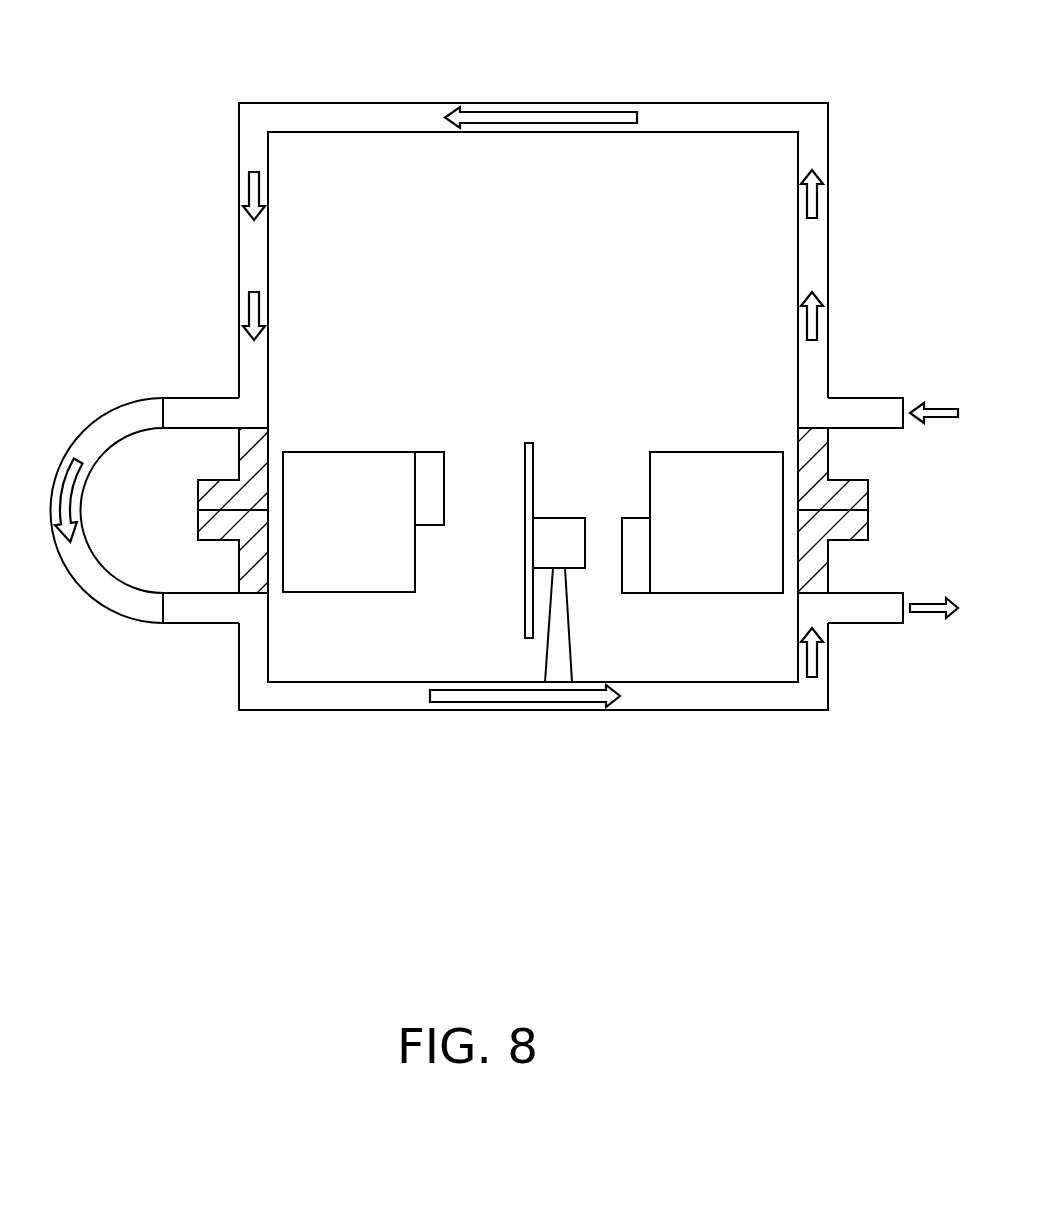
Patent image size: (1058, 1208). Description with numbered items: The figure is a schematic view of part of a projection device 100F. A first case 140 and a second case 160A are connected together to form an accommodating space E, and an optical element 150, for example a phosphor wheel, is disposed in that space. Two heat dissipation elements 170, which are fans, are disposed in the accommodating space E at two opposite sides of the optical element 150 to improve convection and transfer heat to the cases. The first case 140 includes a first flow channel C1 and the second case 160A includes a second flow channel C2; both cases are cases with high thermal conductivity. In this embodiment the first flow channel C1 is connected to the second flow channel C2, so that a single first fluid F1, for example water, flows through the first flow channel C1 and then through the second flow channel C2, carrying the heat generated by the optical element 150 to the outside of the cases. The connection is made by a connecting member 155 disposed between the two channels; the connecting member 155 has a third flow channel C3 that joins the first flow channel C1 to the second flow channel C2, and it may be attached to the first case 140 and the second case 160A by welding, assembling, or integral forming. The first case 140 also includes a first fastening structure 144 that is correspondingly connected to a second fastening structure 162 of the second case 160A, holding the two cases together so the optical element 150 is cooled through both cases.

The projection device 100F is at (173, 87).
The first case 140 is at (820, 133).
The first fastening structure 144 is at (812, 455).
The optical element 150 is at (566, 530).
The connecting member 155 is at (102, 428).
The second case 160A is at (733, 702).
The second fastening structure 162 is at (812, 573).
The heat dissipation element 170 is at (352, 467).
The accommodating space E is at (360, 155).
The first fluid F1 is at (530, 118).
The first flow channel C1 is at (720, 120).
The second flow channel C2 is at (335, 698).
The third flow channel C3 is at (148, 412).